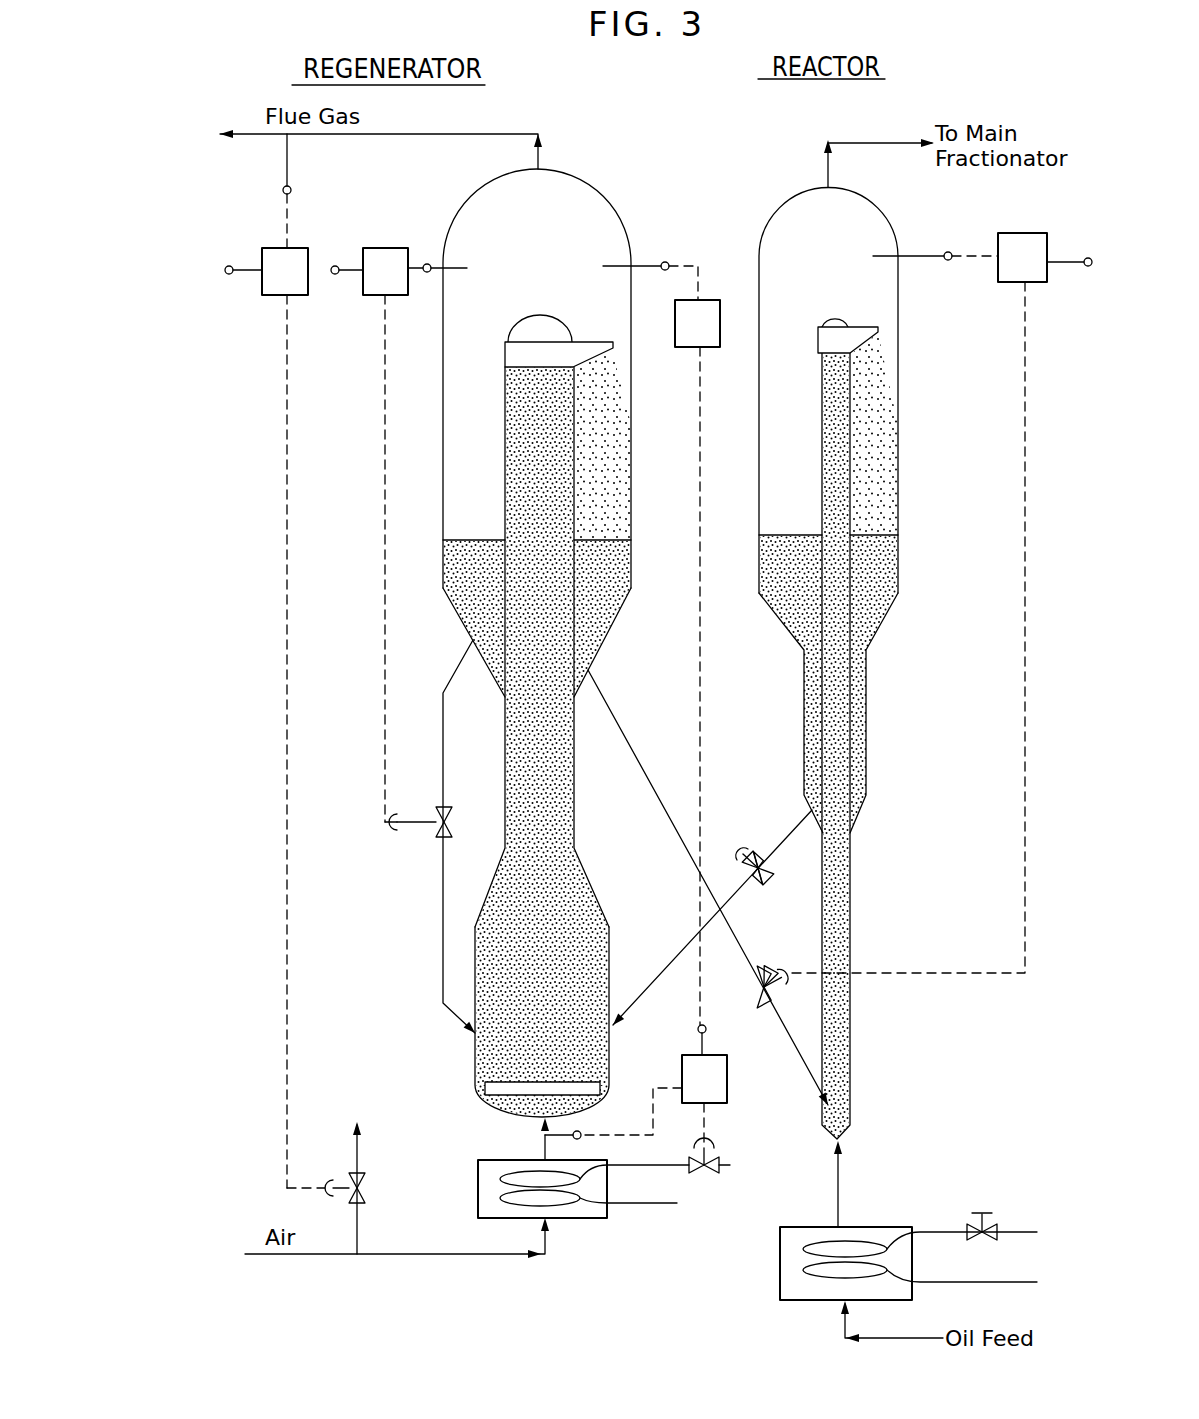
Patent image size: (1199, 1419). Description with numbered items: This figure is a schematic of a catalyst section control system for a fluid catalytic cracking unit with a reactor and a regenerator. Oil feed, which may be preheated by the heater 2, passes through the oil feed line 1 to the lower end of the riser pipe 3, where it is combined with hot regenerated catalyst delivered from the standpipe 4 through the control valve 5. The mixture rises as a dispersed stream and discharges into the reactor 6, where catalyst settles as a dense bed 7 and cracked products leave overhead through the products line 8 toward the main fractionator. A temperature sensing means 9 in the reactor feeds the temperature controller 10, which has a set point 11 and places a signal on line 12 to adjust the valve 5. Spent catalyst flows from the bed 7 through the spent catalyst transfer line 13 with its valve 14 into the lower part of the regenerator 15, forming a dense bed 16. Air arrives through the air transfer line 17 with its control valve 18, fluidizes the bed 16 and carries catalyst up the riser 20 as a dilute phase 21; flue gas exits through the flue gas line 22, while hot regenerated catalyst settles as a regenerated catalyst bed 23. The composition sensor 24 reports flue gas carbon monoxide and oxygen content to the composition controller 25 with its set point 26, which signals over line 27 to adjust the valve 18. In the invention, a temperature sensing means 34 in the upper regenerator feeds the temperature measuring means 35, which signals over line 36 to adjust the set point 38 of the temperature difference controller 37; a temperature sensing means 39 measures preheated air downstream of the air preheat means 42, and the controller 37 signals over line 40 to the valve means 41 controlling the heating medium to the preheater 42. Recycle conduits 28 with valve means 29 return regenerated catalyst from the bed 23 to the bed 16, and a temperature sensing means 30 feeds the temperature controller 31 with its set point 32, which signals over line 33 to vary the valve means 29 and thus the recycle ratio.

The oil feed line 1 is at (846, 1186).
The heater 2 is at (872, 1227).
The riser pipe 3 is at (851, 947).
The standpipe 4 is at (786, 1032).
The control valve 5 is at (783, 970).
The reactor 6 is at (898, 470).
The dense bed 7 is at (828, 582).
The overhead products line 8 is at (855, 140).
The temperature sensing means 9 is at (914, 256).
The temperature controller 10 is at (1020, 233).
The set point 11 is at (1088, 258).
The signal line 12 is at (1025, 470).
The spent catalyst transfer line 13 is at (790, 832).
The valve 14 is at (768, 878).
The regenerator 15 is at (443, 472).
The dense bed 16 is at (542, 1022).
The air transfer line 17 is at (407, 1254).
The control valve 18 is at (362, 1176).
The riser 20 is at (505, 733).
The dilute phase 21 is at (542, 741).
The flue gas line 22 is at (540, 150).
The regenerated catalyst bed 23 is at (537, 523).
The composition sensor 24 is at (287, 163).
The composition controller 25 is at (296, 248).
The set point 26 is at (231, 266).
The signal line 27 is at (287, 472).
The conduit 28 is at (443, 733).
The valve means 29 is at (440, 830).
The temperature sensing means 30 is at (427, 272).
The temperature controller 31 is at (383, 248).
The set point 32 is at (335, 274).
The signal line 33 is at (385, 472).
The temperature sensing means 34 is at (642, 266).
The temperature measuring means 35 is at (702, 300).
The signal line 36 is at (700, 728).
The temperature difference controller 37 is at (727, 1072).
The set point 38 is at (698, 1028).
The temperature sensing means 39 is at (583, 1131).
The signal line 40 is at (705, 1125).
The valve means 41 is at (716, 1145).
The air preheat means 42 is at (570, 1218).